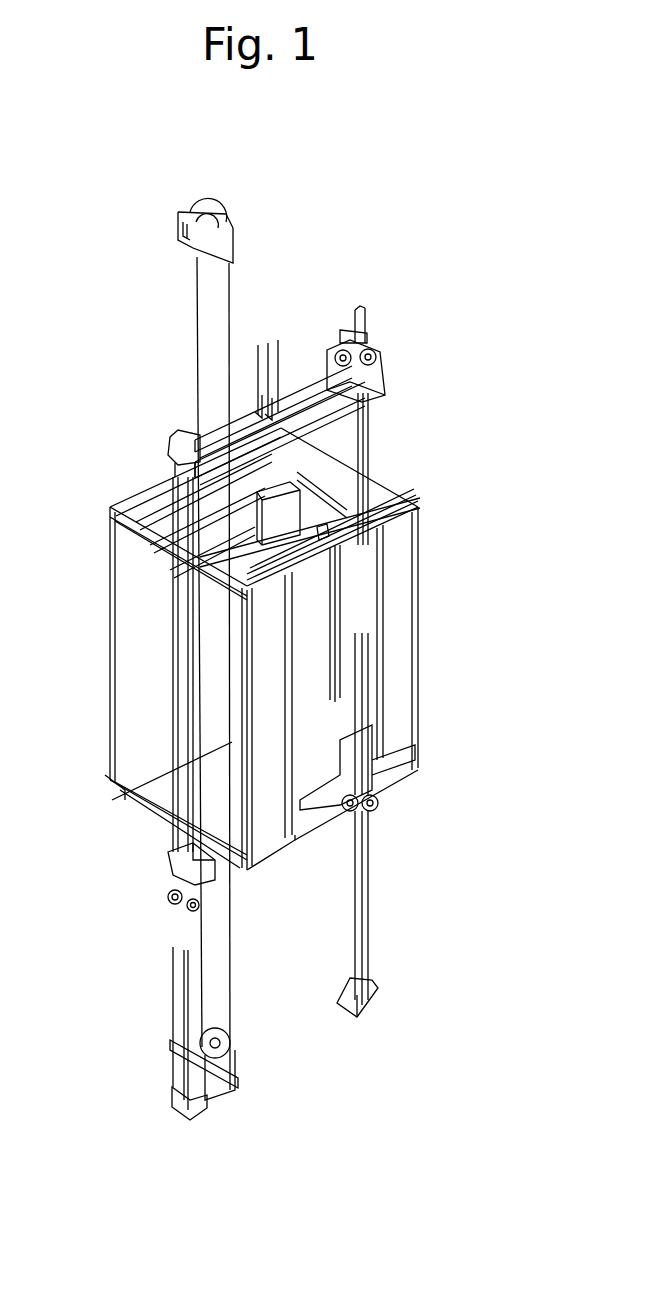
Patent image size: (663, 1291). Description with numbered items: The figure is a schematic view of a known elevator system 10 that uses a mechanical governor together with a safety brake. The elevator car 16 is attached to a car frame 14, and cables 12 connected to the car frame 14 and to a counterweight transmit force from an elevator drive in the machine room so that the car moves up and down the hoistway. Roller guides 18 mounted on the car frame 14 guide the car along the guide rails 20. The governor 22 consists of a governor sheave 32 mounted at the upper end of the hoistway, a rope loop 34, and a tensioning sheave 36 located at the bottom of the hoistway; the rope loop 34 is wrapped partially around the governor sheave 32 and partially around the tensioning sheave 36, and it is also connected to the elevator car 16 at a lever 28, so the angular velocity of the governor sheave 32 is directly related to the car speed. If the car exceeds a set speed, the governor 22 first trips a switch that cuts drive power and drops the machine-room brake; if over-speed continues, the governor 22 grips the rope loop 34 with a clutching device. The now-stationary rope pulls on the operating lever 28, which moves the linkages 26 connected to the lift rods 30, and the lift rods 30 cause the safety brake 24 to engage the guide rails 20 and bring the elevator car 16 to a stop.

The elevator system 10 is at (432, 262).
The cables 12 is at (278, 362).
The car frame 14 is at (372, 406).
The elevator car 16 is at (403, 594).
The roller guides 18 is at (362, 338).
The guide rails 20 is at (368, 930).
The governor 22 is at (238, 240).
The safety brake 24 is at (367, 782).
The linkages 26 is at (325, 417).
The levers 28 is at (362, 383).
The lift rods 30 is at (190, 620).
The governor sheave 32 is at (226, 206).
The rope loop 34 is at (197, 327).
The tensioning sheave 36 is at (235, 1047).